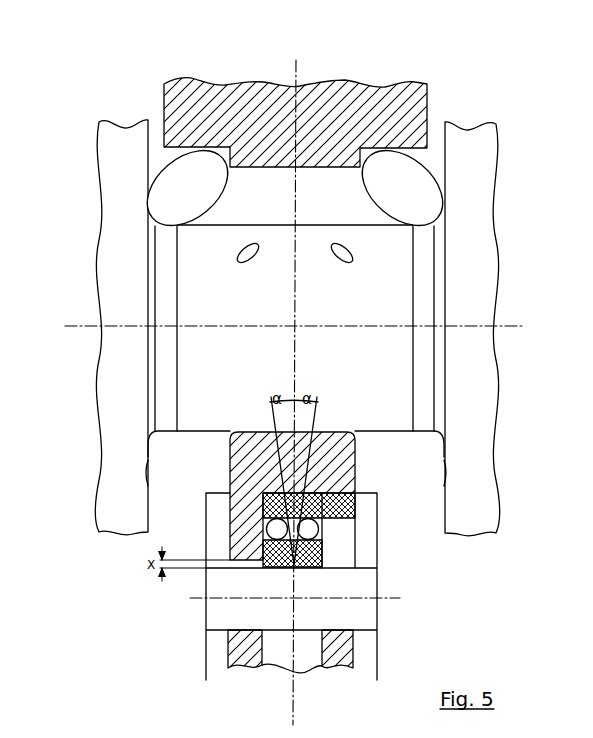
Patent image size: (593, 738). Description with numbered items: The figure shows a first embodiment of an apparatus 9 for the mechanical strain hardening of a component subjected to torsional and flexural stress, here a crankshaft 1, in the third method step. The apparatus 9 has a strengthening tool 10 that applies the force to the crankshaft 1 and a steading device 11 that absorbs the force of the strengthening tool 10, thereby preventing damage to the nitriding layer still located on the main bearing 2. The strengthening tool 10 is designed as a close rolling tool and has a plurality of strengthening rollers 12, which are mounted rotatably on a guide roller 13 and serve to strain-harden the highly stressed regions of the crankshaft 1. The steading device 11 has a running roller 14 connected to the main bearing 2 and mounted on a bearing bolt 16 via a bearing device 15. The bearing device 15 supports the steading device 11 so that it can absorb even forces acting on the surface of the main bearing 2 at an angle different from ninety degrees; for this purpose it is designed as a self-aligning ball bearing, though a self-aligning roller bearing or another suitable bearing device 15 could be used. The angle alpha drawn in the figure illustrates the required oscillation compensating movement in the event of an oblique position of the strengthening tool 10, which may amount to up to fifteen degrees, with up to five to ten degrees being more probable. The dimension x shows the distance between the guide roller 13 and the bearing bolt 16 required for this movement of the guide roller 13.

The crankshaft 1 is at (112, 292).
The main bearing 2 is at (202, 388).
The apparatus 9 is at (445, 100).
The strengthening tool 10 is at (149, 103).
The steading device 11 is at (382, 610).
The strengthening roller 12 is at (175, 182).
The guide roller 13 is at (375, 92).
The running roller 14 is at (345, 462).
The bearing device 15 is at (322, 552).
The bearing bolt 16 is at (215, 614).